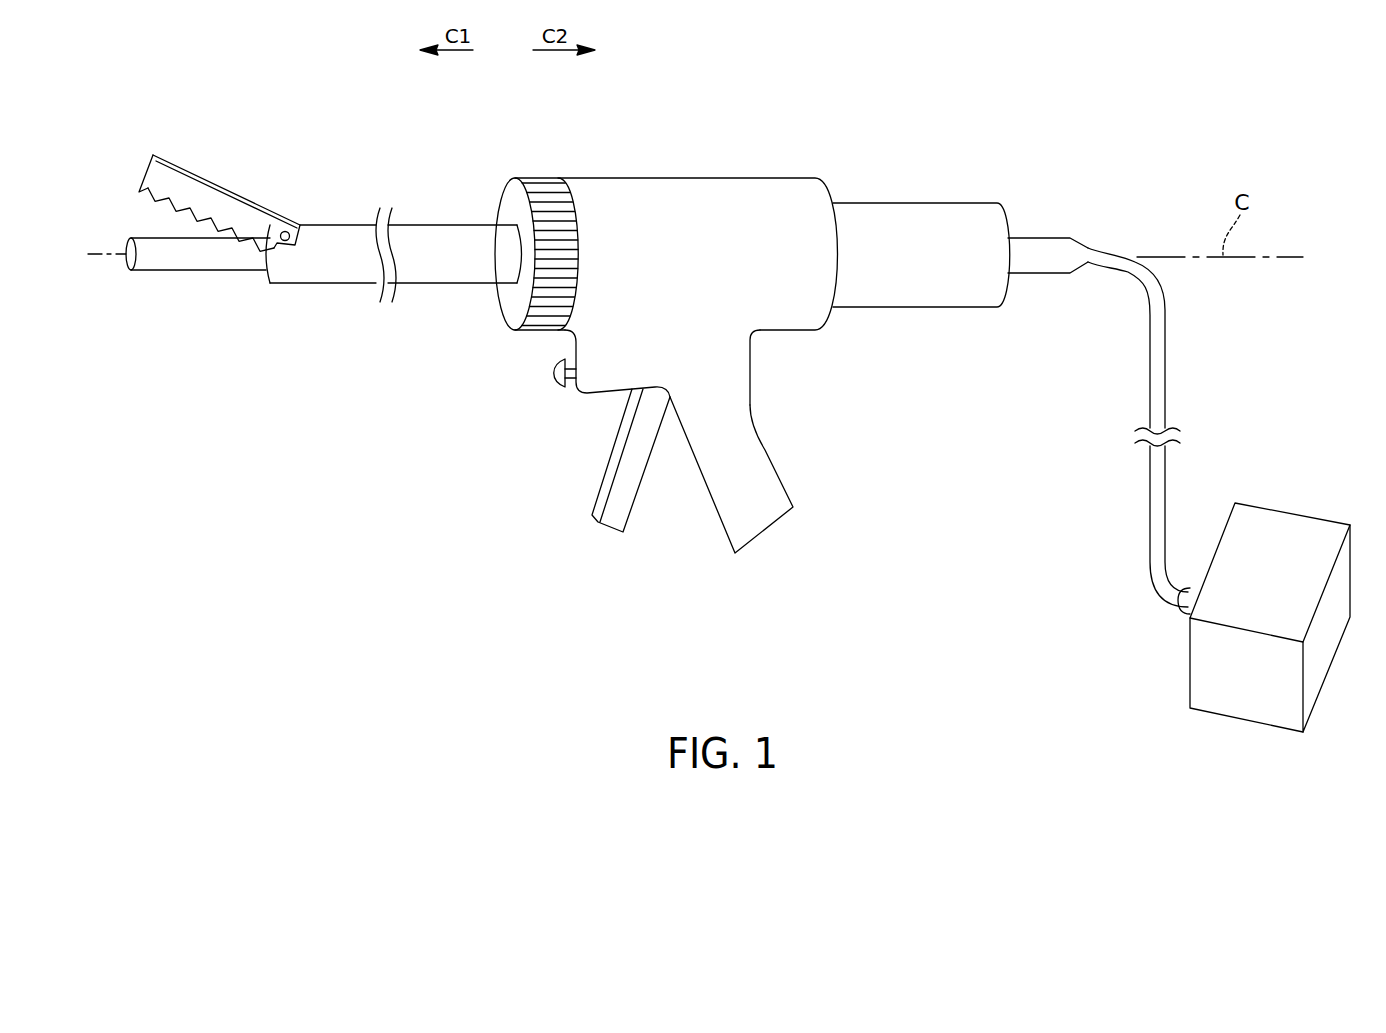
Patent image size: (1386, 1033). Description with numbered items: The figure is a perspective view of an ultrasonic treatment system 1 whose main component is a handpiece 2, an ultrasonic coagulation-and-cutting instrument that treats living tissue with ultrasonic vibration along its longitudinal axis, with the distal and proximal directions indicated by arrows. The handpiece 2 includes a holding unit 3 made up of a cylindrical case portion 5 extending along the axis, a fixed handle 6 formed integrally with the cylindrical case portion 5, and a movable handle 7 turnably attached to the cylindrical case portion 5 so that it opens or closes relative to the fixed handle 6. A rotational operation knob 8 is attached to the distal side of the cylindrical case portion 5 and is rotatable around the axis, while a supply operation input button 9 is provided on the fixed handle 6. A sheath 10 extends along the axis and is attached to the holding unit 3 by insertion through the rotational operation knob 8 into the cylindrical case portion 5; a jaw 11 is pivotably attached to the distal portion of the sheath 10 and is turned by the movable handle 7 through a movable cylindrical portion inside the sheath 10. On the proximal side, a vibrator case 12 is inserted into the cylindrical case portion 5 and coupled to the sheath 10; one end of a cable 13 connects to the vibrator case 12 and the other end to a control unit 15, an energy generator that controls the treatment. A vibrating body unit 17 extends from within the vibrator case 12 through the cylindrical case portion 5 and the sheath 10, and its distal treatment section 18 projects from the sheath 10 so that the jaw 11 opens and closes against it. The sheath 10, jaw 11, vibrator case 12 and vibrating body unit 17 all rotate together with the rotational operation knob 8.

The ultrasonic treatment system 1 is at (1032, 77).
The handpiece 2 is at (862, 184).
The holding unit 3 is at (750, 212).
The cylindrical case portion 5 is at (787, 315).
The fixed handle 6 is at (762, 483).
The movable handle 7 is at (623, 500).
The rotational operation knob 8 is at (541, 186).
The supply operation input button 9 is at (553, 373).
The sheath 10 is at (448, 268).
The jaw 11 is at (218, 197).
The vibrator case 12 is at (958, 290).
The cable 13 is at (1158, 325).
The control unit 15 is at (1280, 540).
The vibrating body unit 17 is at (238, 257).
The treatment section 18 is at (193, 262).